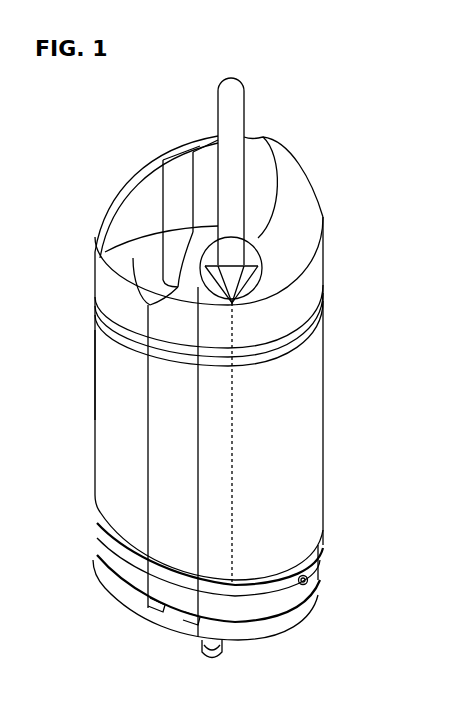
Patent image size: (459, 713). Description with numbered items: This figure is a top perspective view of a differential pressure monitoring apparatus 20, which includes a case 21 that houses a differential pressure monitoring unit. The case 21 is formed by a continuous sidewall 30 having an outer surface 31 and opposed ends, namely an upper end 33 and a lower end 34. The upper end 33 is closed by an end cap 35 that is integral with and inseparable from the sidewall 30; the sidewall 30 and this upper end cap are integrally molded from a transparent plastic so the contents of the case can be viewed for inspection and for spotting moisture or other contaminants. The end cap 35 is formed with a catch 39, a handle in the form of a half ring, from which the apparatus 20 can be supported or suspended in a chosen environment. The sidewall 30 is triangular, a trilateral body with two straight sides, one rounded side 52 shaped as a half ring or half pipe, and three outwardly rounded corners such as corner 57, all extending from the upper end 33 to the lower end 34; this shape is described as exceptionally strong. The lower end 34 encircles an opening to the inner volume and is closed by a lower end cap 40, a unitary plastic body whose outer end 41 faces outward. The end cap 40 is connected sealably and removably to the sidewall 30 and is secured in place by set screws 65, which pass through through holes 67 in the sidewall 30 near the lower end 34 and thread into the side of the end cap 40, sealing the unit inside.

The differential pressure monitoring apparatus 20 is at (108, 173).
The catch 39 is at (233, 110).
The end cap 35 is at (300, 232).
The upper end 33 is at (328, 287).
The outer surface 31 is at (261, 427).
The side 52 is at (296, 420).
The continuous sidewall 30 is at (261, 427).
The corner 57 is at (95, 353).
The case 21 is at (95, 392).
The lower end 34 is at (313, 565).
The end cap 40 is at (118, 595).
The outer end 41 is at (295, 622).
The set screws 65 is at (309, 578).
The through holes 67 is at (310, 585).